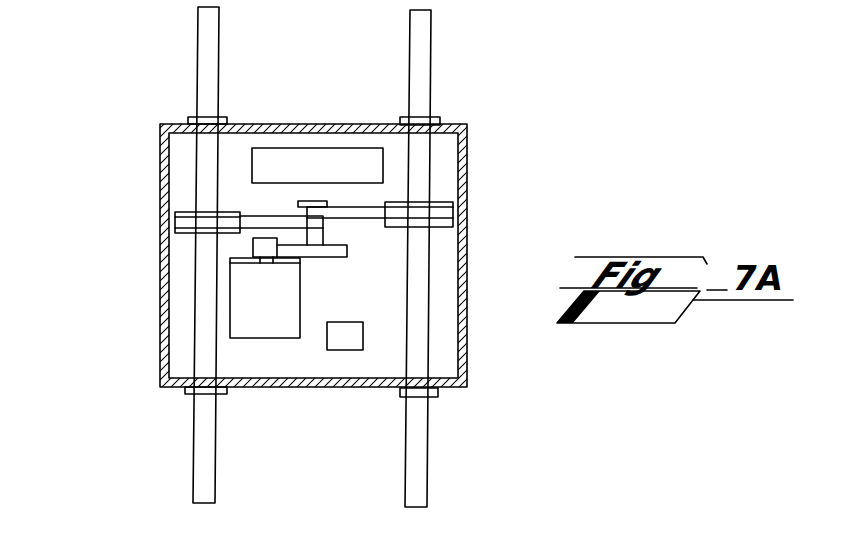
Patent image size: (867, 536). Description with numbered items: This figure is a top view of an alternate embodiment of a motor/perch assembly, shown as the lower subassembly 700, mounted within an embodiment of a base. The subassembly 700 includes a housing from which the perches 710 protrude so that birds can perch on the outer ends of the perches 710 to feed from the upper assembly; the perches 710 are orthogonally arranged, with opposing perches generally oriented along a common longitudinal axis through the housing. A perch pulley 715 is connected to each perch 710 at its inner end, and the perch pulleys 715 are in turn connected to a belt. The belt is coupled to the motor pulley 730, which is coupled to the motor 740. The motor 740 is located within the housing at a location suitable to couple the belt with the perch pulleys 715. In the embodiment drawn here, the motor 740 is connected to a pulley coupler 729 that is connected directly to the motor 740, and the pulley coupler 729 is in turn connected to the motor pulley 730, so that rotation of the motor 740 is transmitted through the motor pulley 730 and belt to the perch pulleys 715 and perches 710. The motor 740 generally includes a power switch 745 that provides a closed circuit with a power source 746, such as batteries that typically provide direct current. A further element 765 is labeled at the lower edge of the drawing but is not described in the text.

The subassembly 700 is at (583, 85).
The perches 710 is at (207, 53).
The perch pulley 715 is at (186, 212).
The pulley coupler 729 is at (255, 245).
The motor pulley 730 is at (333, 257).
The motor 740 is at (273, 325).
The power switch 745 is at (350, 345).
The power source 746 is at (313, 160).
The lower component 765 is at (20, 535).